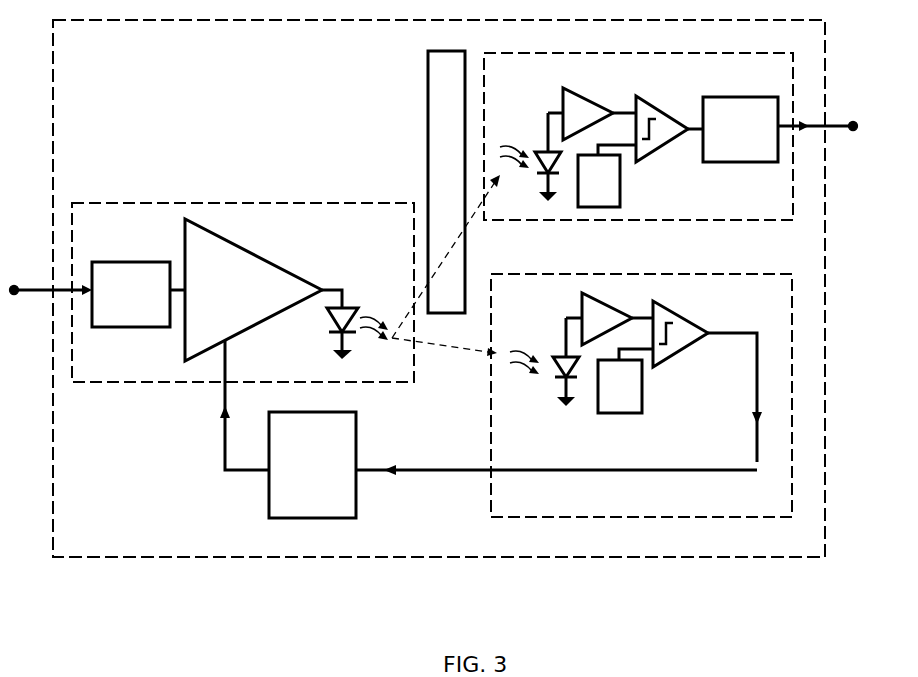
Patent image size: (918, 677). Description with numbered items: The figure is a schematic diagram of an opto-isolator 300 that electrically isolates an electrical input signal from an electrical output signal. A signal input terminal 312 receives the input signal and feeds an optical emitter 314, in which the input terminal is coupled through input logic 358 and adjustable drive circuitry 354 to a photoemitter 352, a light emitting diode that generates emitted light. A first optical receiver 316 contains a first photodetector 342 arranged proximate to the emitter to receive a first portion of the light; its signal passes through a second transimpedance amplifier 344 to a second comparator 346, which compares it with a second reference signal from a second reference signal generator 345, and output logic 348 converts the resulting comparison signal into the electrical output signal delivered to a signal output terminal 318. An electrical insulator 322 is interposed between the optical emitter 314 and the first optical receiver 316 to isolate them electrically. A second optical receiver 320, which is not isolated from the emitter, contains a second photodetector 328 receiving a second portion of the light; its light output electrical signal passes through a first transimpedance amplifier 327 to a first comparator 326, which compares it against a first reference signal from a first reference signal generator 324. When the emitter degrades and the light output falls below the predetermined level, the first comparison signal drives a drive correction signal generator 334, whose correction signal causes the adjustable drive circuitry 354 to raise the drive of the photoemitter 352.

The opto-isolator 300 is at (439, 288).
The signal input terminal 312 is at (16, 296).
The optical emitter 314 is at (334, 198).
The first optical receiver 316 is at (690, 222).
The signal output terminal 318 is at (851, 130).
The second optical receiver 320 is at (490, 436).
The electrical insulator 322 is at (424, 76).
The first reference signal generator 324 is at (644, 398).
The first comparator 326 is at (664, 310).
The first transimpedance amplifier 327 is at (598, 304).
The second photodetector 328 is at (562, 342).
The drive correction signal generator 334 is at (269, 444).
The first photodetector 342 is at (540, 136).
The second transimpedance amplifier 344 is at (580, 100).
The second reference signal generator 345 is at (622, 195).
The second comparator 346 is at (646, 106).
The output logic 348 is at (746, 97).
The photoemitter 352 is at (352, 308).
The adjustable drive circuitry 354 is at (240, 246).
The input logic 358 is at (126, 262).